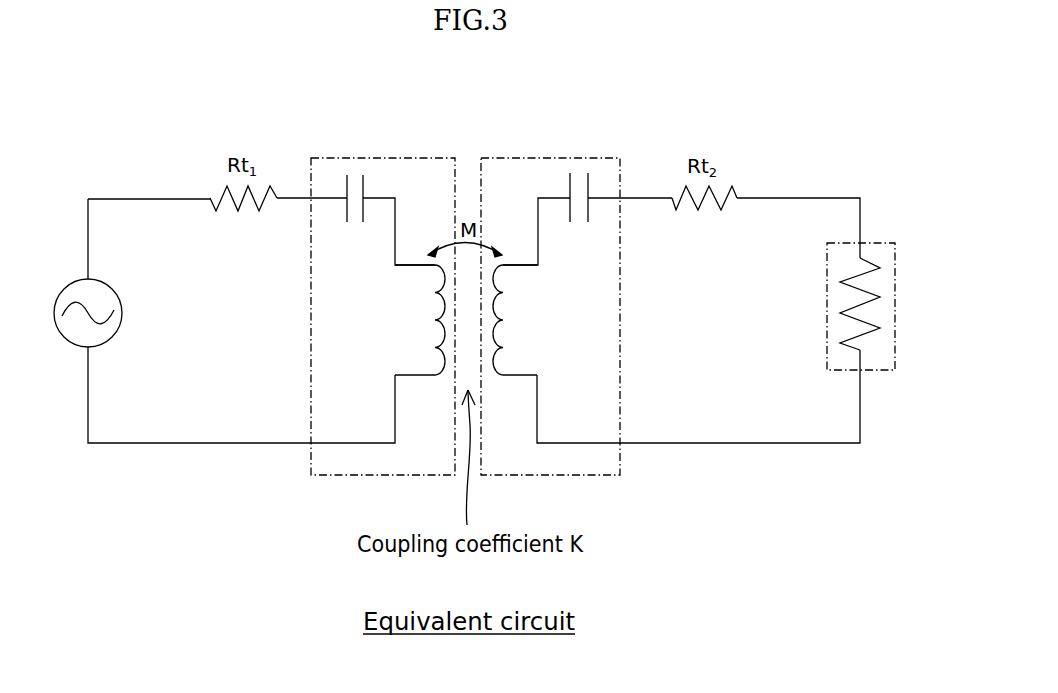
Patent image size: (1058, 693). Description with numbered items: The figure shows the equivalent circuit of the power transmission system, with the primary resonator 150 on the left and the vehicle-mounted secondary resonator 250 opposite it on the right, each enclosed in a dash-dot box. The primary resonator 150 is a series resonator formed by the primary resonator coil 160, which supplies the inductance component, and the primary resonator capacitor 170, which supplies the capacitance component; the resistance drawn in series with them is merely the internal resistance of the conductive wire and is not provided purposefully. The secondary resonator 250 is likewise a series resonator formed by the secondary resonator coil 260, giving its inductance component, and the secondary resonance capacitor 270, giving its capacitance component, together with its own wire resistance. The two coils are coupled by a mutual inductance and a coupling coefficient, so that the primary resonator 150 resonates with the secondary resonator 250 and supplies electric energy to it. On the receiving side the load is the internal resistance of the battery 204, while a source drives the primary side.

The primary resonator 150 is at (390, 158).
The primary resonator coil 160 is at (395, 360).
The primary resonator capacitor 170 is at (343, 175).
The secondary resonator 250 is at (555, 158).
The secondary resonator coil 260 is at (550, 356).
The secondary resonance capacitor 270 is at (590, 173).
The battery 204 is at (892, 243).